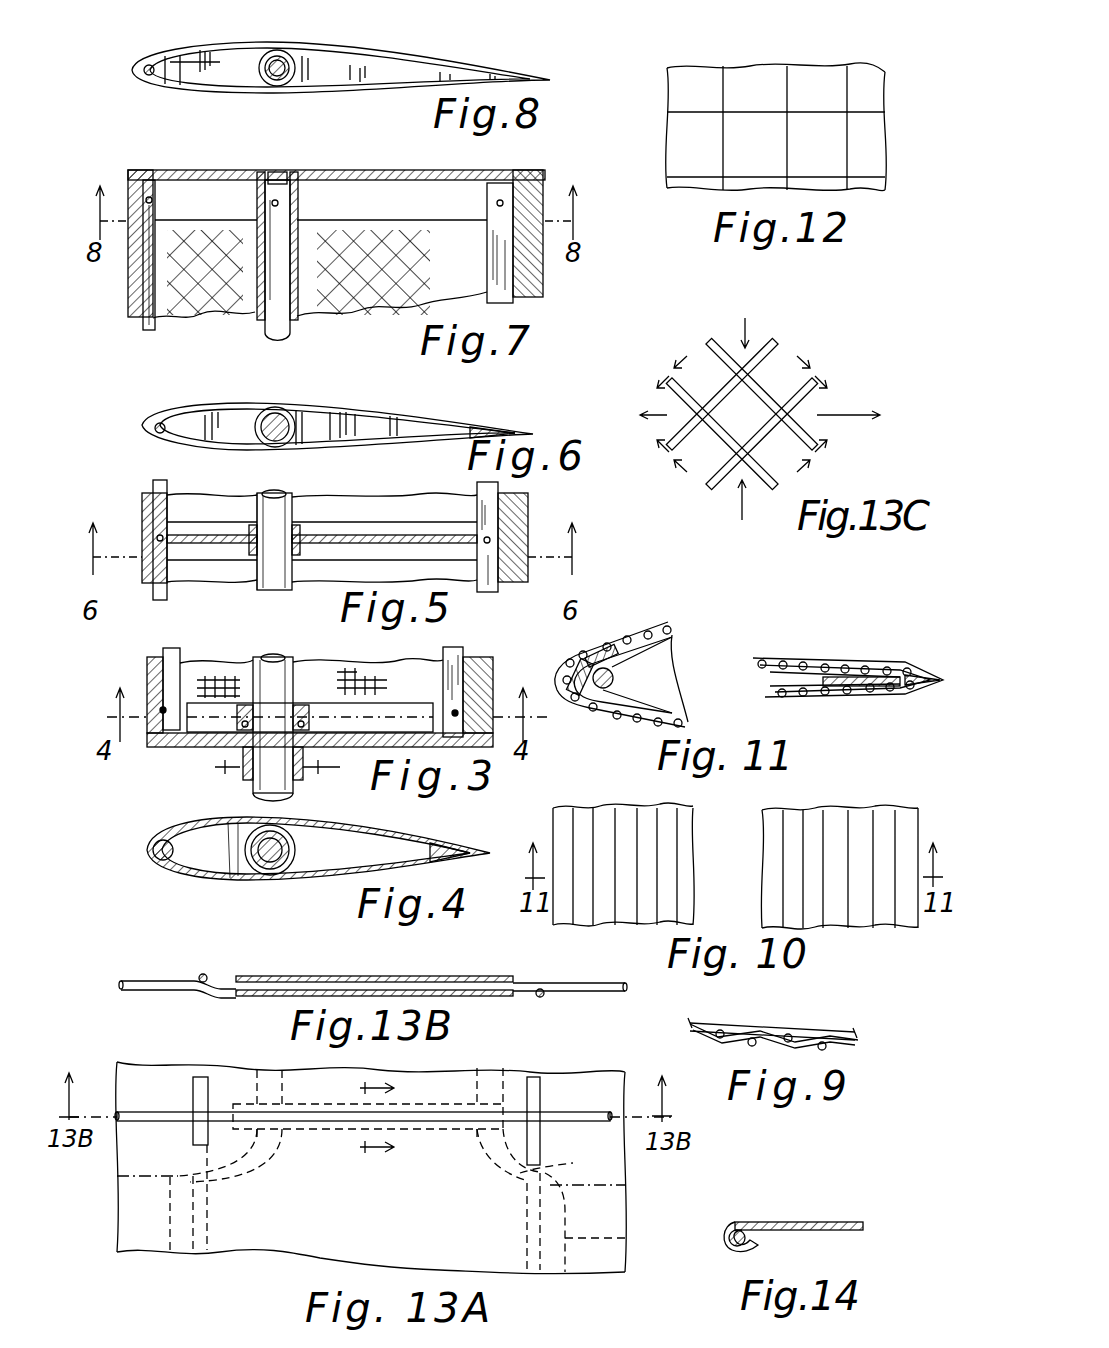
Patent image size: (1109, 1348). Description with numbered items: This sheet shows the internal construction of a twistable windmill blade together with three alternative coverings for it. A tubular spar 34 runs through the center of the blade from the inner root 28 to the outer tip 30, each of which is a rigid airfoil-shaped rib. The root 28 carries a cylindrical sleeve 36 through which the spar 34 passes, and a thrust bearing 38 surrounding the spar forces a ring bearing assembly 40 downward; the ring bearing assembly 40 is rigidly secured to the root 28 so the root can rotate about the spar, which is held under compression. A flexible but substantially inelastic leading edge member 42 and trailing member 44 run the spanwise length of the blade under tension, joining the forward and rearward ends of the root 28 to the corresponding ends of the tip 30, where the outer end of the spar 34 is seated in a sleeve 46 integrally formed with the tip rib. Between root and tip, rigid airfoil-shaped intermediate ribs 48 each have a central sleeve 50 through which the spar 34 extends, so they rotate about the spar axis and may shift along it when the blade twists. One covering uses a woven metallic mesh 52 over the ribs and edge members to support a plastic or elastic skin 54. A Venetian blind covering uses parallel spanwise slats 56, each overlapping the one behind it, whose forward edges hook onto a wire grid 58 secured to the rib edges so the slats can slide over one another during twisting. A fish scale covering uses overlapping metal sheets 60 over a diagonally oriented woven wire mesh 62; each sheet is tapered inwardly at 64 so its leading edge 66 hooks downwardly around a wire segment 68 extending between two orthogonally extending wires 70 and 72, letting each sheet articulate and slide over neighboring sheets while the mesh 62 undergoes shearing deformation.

In FIG. 3, the inner root 28 is at (190, 748).
In FIG. 4, the inner root 28 is at (195, 872).
In FIG. 8, the outer tip 30 is at (195, 52).
In FIG. 7, the outer tip 30 is at (186, 172).
In FIG. 8, the spar 34 is at (262, 84).
In FIG. 7, the spar 34 is at (262, 323).
In FIG. 6, the spar 34 is at (260, 440).
In FIG. 5, the spar 34 is at (274, 570).
In FIG. 3, the spar 34 is at (268, 657).
In FIG. 4, the spar 34 is at (276, 865).
In FIG. 4, the cylindrical sleeve 36 is at (258, 870).
In FIG. 3, the thrust bearing 38 is at (305, 712).
In FIG. 3, the ring bearing assembly 40 is at (315, 750).
In FIG. 7, the leading edge member 42 is at (144, 322).
In FIG. 6, the leading edge member 42 is at (155, 430).
In FIG. 5, the leading edge member 42 is at (167, 592).
In FIG. 3, the leading edge member 42 is at (168, 655).
In FIG. 4, the leading edge member 42 is at (158, 855).
In FIG. 11, the leading edge member 42 is at (610, 680).
In FIG. 7, the trailing edge member 44 is at (543, 298).
In FIG. 6, the trailing edge member 44 is at (483, 430).
In FIG. 5, the trailing edge member 44 is at (493, 592).
In FIG. 3, the trailing edge member 44 is at (452, 650).
In FIG. 4, the trailing edge member 44 is at (438, 846).
In FIG. 11, the trailing edge member 44 is at (805, 698).
In FIG. 8, the sleeve 46 is at (312, 62).
In FIG. 7, the sleeve 46 is at (300, 200).
In FIG. 6, the intermediate rib 48 is at (390, 415).
In FIG. 5, the intermediate rib 48 is at (328, 546).
In FIG. 6, the central sleeve 50 is at (305, 414).
In FIG. 9, the woven metallic mesh 52 is at (838, 1048).
In FIG. 9, the skin 54 is at (797, 1028).
In FIG. 11, the slats 56 is at (632, 630).
In FIG. 10, the slats 56 is at (608, 828).
In FIG. 3, the wire grid 58 is at (388, 692).
In FIG. 11, the wire grid 58 is at (653, 652).
In FIG. 12, the metal sheets 60 is at (817, 73).
In FIG. 13A, the metal sheets 60 is at (565, 1238).
In FIG. 14, the metal sheets 60 is at (800, 1222).
In FIG. 7, the woven wire mesh 62 is at (400, 278).
In FIG. 13C, the woven wire mesh 62 is at (767, 370).
In FIG. 13B, the woven wire mesh 62 is at (182, 960).
In FIG. 13A, the woven wire mesh 62 is at (143, 1110).
In FIG. 14, the woven wire mesh 62 is at (728, 1245).
In FIG. 13A, the taper 64 is at (562, 1160).
In FIG. 13B, the leading edge 66 is at (292, 963).
In FIG. 13A, the leading edge 66 is at (282, 1070).
In FIG. 14, the leading edge 66 is at (726, 1236).
In FIG. 13B, the wire segment 68 is at (583, 963).
In FIG. 13A, the wire segment 68 is at (312, 1122).
In FIG. 13A, the orthogonally extending wire 70 is at (193, 1130).
In FIG. 13A, the orthogonally extending wire 72 is at (540, 1100).